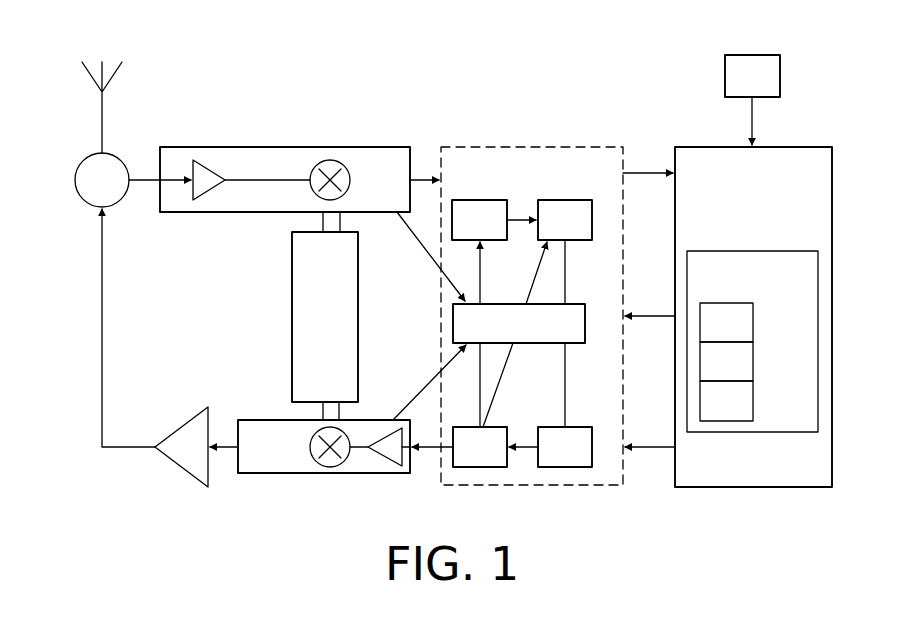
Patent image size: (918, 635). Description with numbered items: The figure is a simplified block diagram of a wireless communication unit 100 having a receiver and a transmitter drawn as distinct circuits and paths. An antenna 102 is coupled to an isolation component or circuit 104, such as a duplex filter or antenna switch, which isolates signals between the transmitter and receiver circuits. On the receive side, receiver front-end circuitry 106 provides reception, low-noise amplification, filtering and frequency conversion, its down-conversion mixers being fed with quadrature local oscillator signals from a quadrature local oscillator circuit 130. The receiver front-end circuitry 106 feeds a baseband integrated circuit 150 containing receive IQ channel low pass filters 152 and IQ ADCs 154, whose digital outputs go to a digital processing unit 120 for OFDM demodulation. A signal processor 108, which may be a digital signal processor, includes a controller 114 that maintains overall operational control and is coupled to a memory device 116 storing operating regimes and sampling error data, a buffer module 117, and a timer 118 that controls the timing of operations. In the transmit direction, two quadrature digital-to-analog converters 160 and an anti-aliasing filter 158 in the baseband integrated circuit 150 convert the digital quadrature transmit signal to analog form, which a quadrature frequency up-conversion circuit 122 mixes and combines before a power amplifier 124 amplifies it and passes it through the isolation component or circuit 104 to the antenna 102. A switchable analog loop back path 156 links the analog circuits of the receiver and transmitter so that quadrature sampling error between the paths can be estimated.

The wireless communication unit 100 is at (257, 58).
The antenna 102 is at (100, 121).
The isolation component or circuit 104 is at (88, 191).
The receiver front-end circuitry 106 is at (367, 191).
The signal processor 108 is at (738, 238).
The controller 114 is at (739, 283).
The memory device 116 is at (713, 333).
The buffer module 117 is at (713, 372).
The timer 118 is at (713, 411).
The digital processing unit 120 is at (738, 84).
The quadrature frequency up-conversion circuit 122 is at (256, 458).
The power amplifier 124 is at (201, 452).
The quadrature local oscillator circuit 130 is at (311, 354).
The baseband integrated circuit 150 is at (511, 186).
The receive IQ channel low pass filters 152 is at (466, 231).
The IQ ADCs 154 is at (551, 231).
The switchable analog loop back path 156 is at (465, 334).
The anti-aliasing filter 158 is at (466, 458).
The quadrature digital-to-analog converters 160 is at (551, 458).